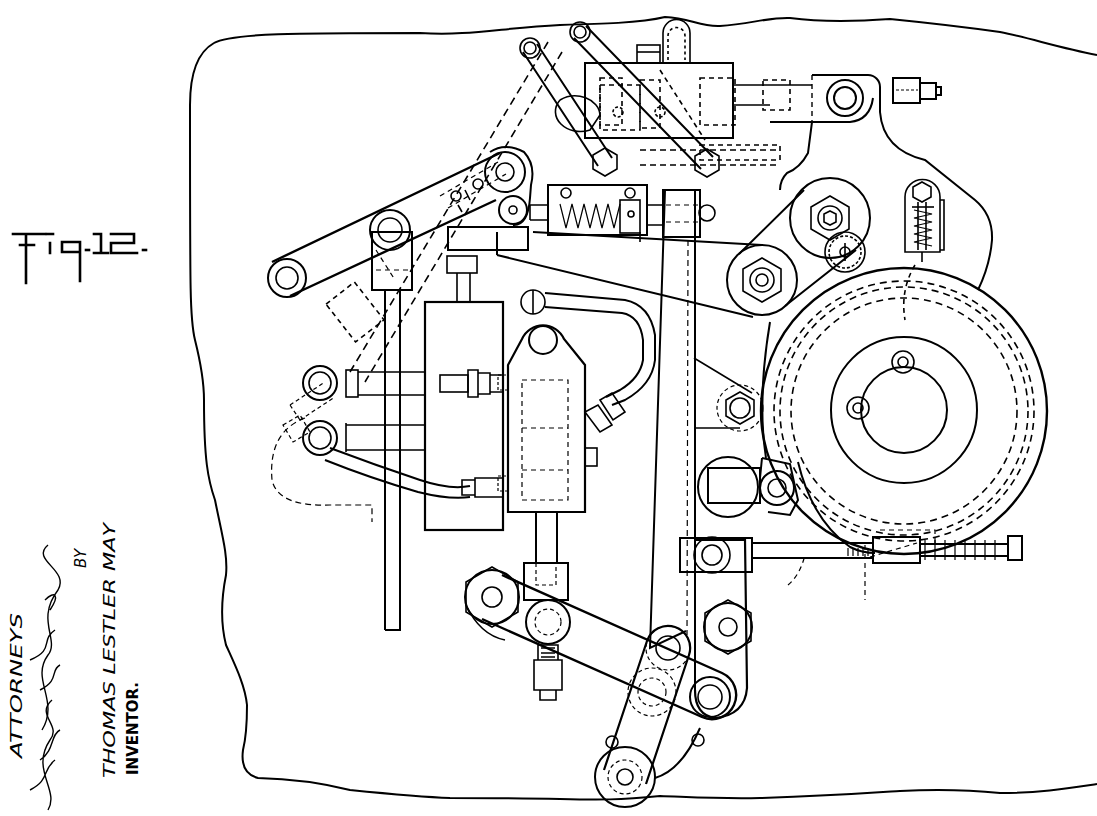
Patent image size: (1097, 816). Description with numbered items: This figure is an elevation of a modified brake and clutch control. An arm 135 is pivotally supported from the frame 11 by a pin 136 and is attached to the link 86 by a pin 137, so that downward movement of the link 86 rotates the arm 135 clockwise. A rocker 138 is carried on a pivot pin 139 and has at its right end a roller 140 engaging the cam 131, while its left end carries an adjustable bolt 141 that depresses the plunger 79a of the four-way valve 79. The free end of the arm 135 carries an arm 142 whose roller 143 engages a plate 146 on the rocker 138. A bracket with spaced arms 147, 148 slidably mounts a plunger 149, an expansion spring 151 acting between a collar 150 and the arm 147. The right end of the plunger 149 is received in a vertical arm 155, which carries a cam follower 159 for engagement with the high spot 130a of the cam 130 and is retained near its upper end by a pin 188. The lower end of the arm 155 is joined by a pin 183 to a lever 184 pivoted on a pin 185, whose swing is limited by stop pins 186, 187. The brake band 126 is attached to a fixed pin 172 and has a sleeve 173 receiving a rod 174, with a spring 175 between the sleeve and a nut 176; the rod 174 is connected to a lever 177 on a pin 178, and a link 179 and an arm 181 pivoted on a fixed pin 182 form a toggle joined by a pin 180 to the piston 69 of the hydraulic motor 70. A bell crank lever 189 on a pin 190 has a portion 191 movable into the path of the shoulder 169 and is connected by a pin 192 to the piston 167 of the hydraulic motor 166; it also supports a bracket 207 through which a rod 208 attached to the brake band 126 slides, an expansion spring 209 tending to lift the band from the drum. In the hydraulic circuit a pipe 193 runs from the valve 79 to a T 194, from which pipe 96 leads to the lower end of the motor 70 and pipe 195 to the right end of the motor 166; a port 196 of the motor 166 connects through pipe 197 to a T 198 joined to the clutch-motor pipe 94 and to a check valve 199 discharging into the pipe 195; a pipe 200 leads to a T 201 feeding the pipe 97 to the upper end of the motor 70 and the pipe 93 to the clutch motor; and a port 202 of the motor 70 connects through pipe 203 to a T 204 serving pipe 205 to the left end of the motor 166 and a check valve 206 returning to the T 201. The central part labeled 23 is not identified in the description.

The frame 11 is at (220, 125).
The hub 23 is at (930, 388).
The piston 69 is at (590, 444).
The hydraulic motor 70 is at (588, 480).
The four-way valve 79 is at (478, 520).
The plunger 79a is at (464, 416).
The link 86 is at (384, 580).
The pipe 93 is at (318, 512).
The pipe 94 is at (748, 150).
The pipe 96 is at (415, 480).
The pipe 97 is at (450, 370).
The brake band 126 is at (762, 440).
The cam 130 is at (990, 515).
The high spot 130a is at (831, 583).
The cam 131 is at (1030, 330).
The arm 135 is at (340, 238).
The pin 136 is at (282, 280).
The pin 137 is at (390, 225).
The rocker 138 is at (718, 250).
The pivot pin 139 is at (762, 282).
The roller 140 is at (862, 258).
The adjustable bolt 141 is at (480, 265).
The arm 142 is at (528, 172).
The roller 143 is at (585, 236).
The plate 146 is at (525, 248).
The arm 147 is at (566, 200).
The arm 148 is at (650, 195).
The plunger 149 is at (700, 186).
The collar 150 is at (632, 234).
The expansion spring 151 is at (615, 245).
The vertical arm 155 is at (658, 505).
The cam follower 159 is at (742, 375).
The hydraulic motor 166 is at (725, 78).
The piston 167 is at (700, 72).
The shoulder 169 is at (920, 295).
The fixed pin 172 is at (780, 495).
The sleeve 173 is at (886, 563).
The rod 174 is at (828, 556).
The spring 175 is at (970, 560).
The nut 176 is at (1023, 548).
The lever 177 is at (732, 585).
The pin 178 is at (738, 628).
The link 179 is at (612, 612).
The pin 180 is at (545, 625).
The arm 181 is at (495, 630).
The fixed pin 182 is at (488, 598).
The pin 183 is at (665, 640).
The lever 184 is at (690, 748).
The pin 185 is at (640, 695).
The stop pin 186 is at (606, 742).
The stop pin 187 is at (705, 740).
The pin 188 is at (715, 210).
The bell crank lever 189 is at (925, 160).
The pin 190 is at (832, 213).
The portion 191 is at (960, 268).
The pin 192 is at (850, 92).
The pipe 193 is at (425, 445).
The T 194 is at (322, 448).
The pipe 195 is at (560, 60).
The port 196 is at (670, 60).
The pipe 197 is at (672, 42).
The T 198 is at (745, 88).
The check valve 199 is at (619, 107).
The pipe 200 is at (420, 385).
The T 201 is at (300, 392).
The port 202 is at (568, 415).
The pipe 203 is at (650, 330).
The T 204 is at (410, 192).
The pipe 205 is at (492, 95).
The check valve 206 is at (338, 314).
The bracket 207 is at (945, 228).
The rod 208 is at (928, 183).
The expansion spring 209 is at (925, 225).